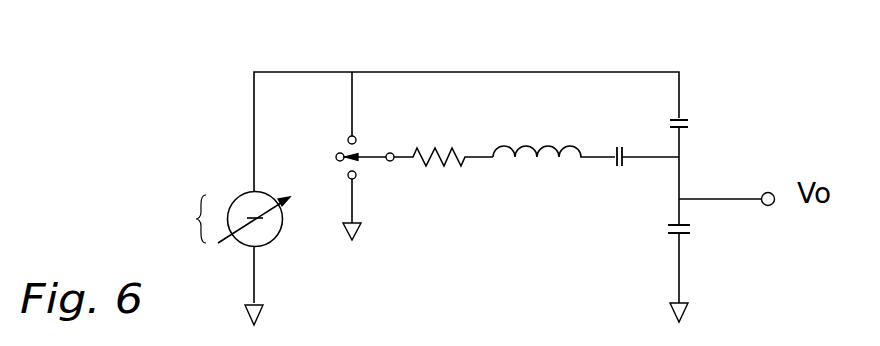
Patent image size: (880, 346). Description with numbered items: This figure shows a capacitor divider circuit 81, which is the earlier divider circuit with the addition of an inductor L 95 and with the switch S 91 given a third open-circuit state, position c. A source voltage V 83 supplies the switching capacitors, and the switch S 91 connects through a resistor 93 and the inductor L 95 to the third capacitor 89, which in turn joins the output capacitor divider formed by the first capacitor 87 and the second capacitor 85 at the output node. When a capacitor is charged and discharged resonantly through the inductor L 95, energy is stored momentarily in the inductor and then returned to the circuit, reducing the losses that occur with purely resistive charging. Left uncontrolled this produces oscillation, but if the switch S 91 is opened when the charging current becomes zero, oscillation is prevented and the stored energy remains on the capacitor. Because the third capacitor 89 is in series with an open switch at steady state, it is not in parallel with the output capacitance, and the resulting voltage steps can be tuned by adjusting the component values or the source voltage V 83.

The capacitor divider circuit 81 is at (213, 75).
The source voltage V 83 is at (237, 193).
The capacitor C2 85 is at (687, 238).
The capacitor C1 87 is at (693, 142).
The capacitor C3 89 is at (622, 132).
The switch S 91 is at (362, 188).
The resistor R 93 is at (438, 173).
The inductor L 95 is at (548, 160).